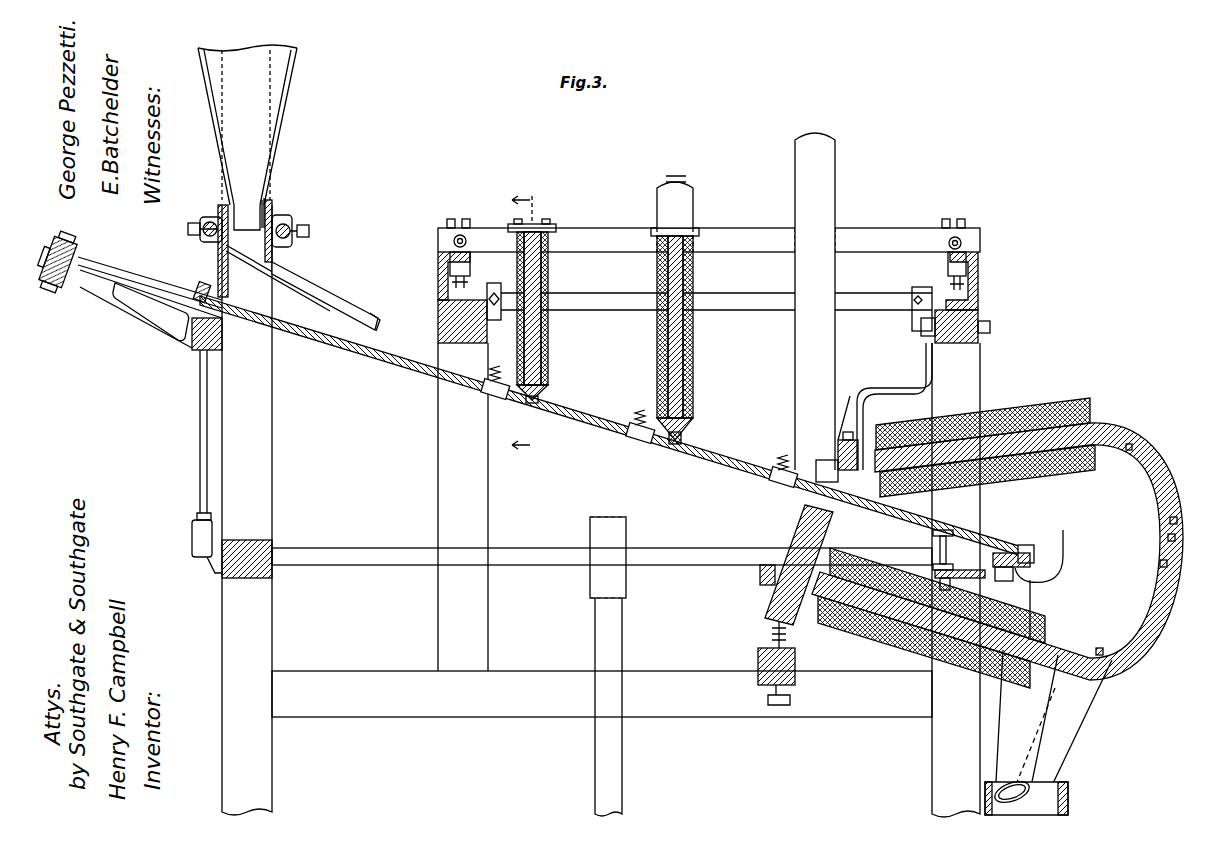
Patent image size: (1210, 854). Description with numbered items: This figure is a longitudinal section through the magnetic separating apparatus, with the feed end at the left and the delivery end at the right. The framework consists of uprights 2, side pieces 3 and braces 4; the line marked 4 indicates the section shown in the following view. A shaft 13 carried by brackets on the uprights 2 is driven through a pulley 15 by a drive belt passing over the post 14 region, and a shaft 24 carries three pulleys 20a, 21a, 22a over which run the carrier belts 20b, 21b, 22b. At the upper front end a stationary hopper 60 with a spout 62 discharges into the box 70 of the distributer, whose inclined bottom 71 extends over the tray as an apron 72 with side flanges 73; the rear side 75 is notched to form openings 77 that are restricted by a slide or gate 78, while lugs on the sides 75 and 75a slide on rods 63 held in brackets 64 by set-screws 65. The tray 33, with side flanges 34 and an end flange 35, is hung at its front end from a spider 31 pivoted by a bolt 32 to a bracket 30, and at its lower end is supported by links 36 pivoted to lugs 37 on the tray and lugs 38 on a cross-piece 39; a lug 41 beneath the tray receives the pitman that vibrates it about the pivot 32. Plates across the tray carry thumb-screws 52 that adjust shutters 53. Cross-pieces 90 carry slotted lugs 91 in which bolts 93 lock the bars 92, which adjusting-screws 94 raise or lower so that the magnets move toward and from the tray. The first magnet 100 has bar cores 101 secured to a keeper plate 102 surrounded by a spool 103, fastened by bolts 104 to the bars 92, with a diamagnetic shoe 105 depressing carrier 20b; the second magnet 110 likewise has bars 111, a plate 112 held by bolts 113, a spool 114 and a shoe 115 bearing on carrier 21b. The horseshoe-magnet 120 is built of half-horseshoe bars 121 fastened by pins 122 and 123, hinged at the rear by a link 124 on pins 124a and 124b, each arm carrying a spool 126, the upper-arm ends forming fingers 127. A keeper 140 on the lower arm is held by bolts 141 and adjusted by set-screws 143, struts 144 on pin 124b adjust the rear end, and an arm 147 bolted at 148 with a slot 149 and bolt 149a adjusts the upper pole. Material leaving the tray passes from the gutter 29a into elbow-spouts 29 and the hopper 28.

The uprights 2 is at (438, 477).
The side pieces 3 is at (381, 675).
The braces 4 is at (527, 324).
The shaft 13 is at (372, 565).
The vertical post 14 is at (622, 650).
The pulley 15 is at (592, 597).
The pulley 20a is at (556, 222).
The belt (carrier) 20b is at (537, 189).
The pulley 21a is at (693, 200).
The belt (carrier) 21b is at (683, 180).
The pulley 22a is at (835, 185).
The belt (carrier) 22b is at (815, 133).
The shaft 24 is at (745, 305).
The hopper 28 is at (1070, 785).
The elbow-spouts 29 is at (1050, 720).
The gutter 29a is at (1066, 553).
The bracket 30 is at (168, 340).
The spider 31 is at (136, 282).
The bolt 32 is at (68, 262).
The tray 33 is at (380, 368).
The side pieces or flanges 34 is at (430, 352).
The end piece or flange 35 is at (196, 290).
The links 36 is at (933, 548).
The lugs 37 is at (945, 528).
The lugs 38 is at (960, 582).
The cross-piece 39 is at (1035, 592).
The lug 41 is at (1015, 552).
The thumb-screws 52 is at (493, 365).
The shutters 53 is at (505, 394).
The stationary hopper 60 is at (288, 84).
The spout 62 is at (262, 212).
The rod 63 is at (209, 222).
The brackets 64 is at (200, 233).
The set-screws 65 is at (192, 220).
The box 70 is at (238, 205).
The bottom 71 is at (248, 280).
The apron 72 is at (312, 292).
The side flanges 73 is at (372, 312).
The rear side of the box 75 is at (285, 210).
The front side of the box 75a is at (218, 258).
The openings 77 is at (272, 263).
The slide or gate 78 is at (265, 240).
The cross-pieces 90 is at (438, 278).
The slotted lugs 91 is at (470, 219).
The bar 92 is at (899, 228).
The bolt 93 is at (962, 238).
The adjusting-screws 94 is at (470, 282).
The upper or first magnet 100 is at (548, 356).
The bars (cores) 101 is at (541, 334).
The plate (keeper) 102 is at (535, 232).
The spool 103 is at (548, 277).
The bolts 104 is at (530, 228).
The thin plate (shoe) 105 is at (540, 402).
The second magnet 110 is at (700, 273).
The bars (cores) 111 is at (693, 387).
The plate 112 is at (699, 232).
The bolts 113 is at (660, 220).
The spool 114 is at (693, 357).
The thin plate (shoe) 115 is at (700, 432).
The horseshoe-magnet 120 is at (1130, 492).
The bars 121 is at (1095, 420).
The pin 122 is at (1132, 447).
The pin 123 is at (1110, 660).
The link 124 is at (1168, 540).
The pin 124a is at (1168, 520).
The pin 124b is at (1160, 563).
The spool 126 is at (1068, 478).
The fingers 127 is at (855, 415).
The keeper 140 is at (768, 622).
The bolts 141 is at (760, 580).
The set-screws 143 is at (780, 706).
The struts 144 is at (1100, 690).
The arm 147 is at (897, 386).
The bolt 148 is at (841, 449).
The slot 149 is at (921, 330).
The bolt 149a is at (990, 322).